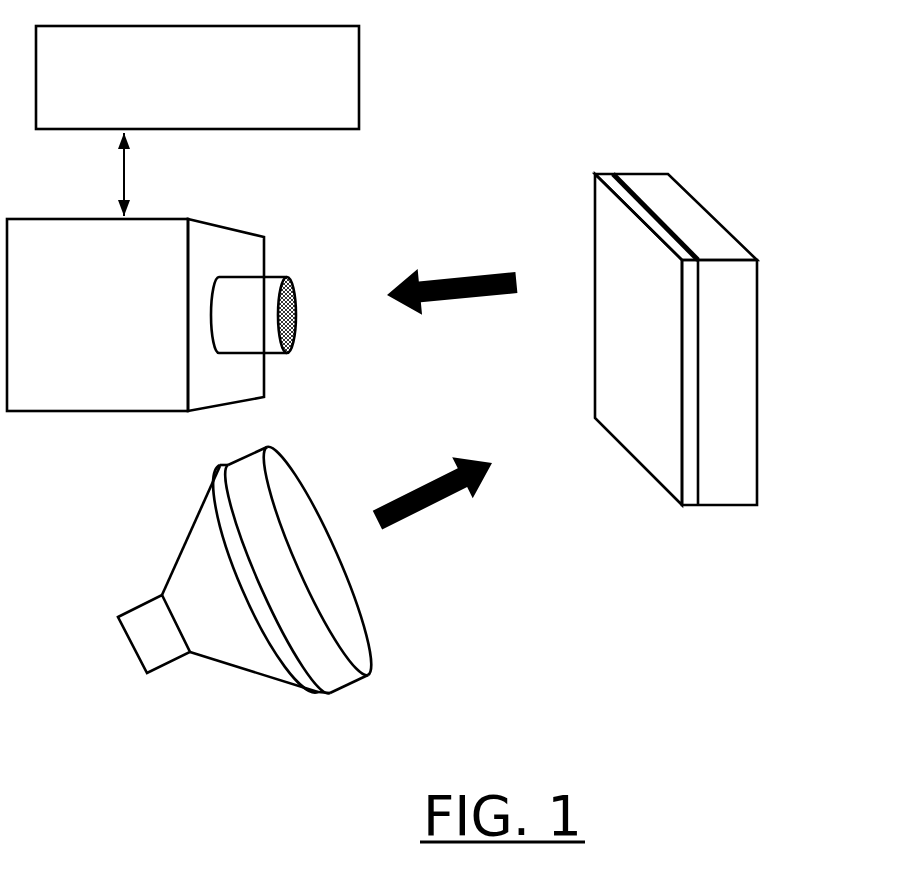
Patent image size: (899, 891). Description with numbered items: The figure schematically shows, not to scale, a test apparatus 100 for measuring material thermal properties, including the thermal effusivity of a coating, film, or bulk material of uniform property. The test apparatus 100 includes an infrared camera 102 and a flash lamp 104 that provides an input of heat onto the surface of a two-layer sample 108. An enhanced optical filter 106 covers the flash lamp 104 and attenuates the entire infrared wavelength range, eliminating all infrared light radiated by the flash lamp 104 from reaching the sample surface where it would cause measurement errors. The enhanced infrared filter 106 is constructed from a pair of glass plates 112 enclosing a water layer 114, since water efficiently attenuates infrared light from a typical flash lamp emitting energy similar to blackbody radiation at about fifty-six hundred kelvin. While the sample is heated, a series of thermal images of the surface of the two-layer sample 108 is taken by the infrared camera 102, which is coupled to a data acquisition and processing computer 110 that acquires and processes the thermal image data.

The test apparatus 100 is at (510, 141).
The infrared camera 102 is at (151, 348).
The flash lamp 104 is at (169, 579).
The enhanced optical filter 106 is at (315, 604).
The two-layer sample 108 is at (726, 377).
The data acquisition and processing computer 110 is at (197, 121).
The glass plates 112 is at (294, 643).
The water layer 114 is at (313, 614).